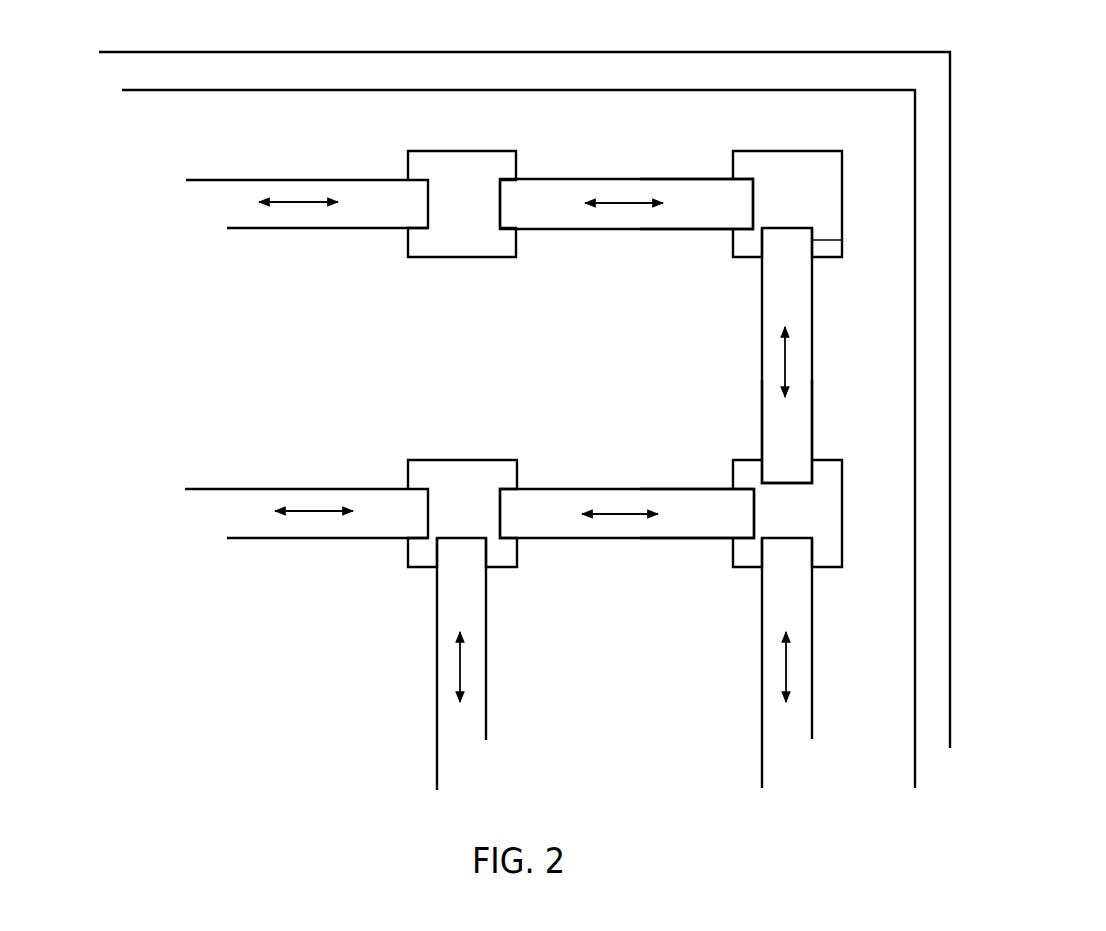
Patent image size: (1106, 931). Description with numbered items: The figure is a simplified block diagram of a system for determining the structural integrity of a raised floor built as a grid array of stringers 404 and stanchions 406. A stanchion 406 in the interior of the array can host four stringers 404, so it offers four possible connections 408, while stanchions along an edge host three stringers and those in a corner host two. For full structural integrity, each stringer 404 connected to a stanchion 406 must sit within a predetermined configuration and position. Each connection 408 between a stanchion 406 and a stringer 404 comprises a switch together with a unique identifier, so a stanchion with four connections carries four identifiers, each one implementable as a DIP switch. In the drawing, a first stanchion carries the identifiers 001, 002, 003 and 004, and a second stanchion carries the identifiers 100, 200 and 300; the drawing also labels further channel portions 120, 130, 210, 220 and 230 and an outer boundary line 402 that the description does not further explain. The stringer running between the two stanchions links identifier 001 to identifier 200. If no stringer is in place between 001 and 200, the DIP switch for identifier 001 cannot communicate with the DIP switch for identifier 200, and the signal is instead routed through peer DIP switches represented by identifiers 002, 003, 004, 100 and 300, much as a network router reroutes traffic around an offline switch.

The identifier 100 is at (307, 204).
The identifier 200 is at (462, 221).
The identifier 300 is at (626, 204).
The first connecting channel outlet 120 is at (696, 204).
The first vertical channel 130 is at (787, 355).
The vertical channel inlet to second junction 210 is at (787, 431).
The identifier 001 is at (462, 495).
The identifier 002 is at (306, 513).
The identifier 003 is at (627, 513).
The identifier 004 is at (461, 664).
The second connecting channel outlet 220 is at (697, 513).
The third outlet channel 230 is at (787, 624).
The outer boundary wall 402 is at (950, 483).
The stringer 404 is at (812, 597).
The stanchion 406 is at (842, 188).
The connection 408 is at (842, 240).